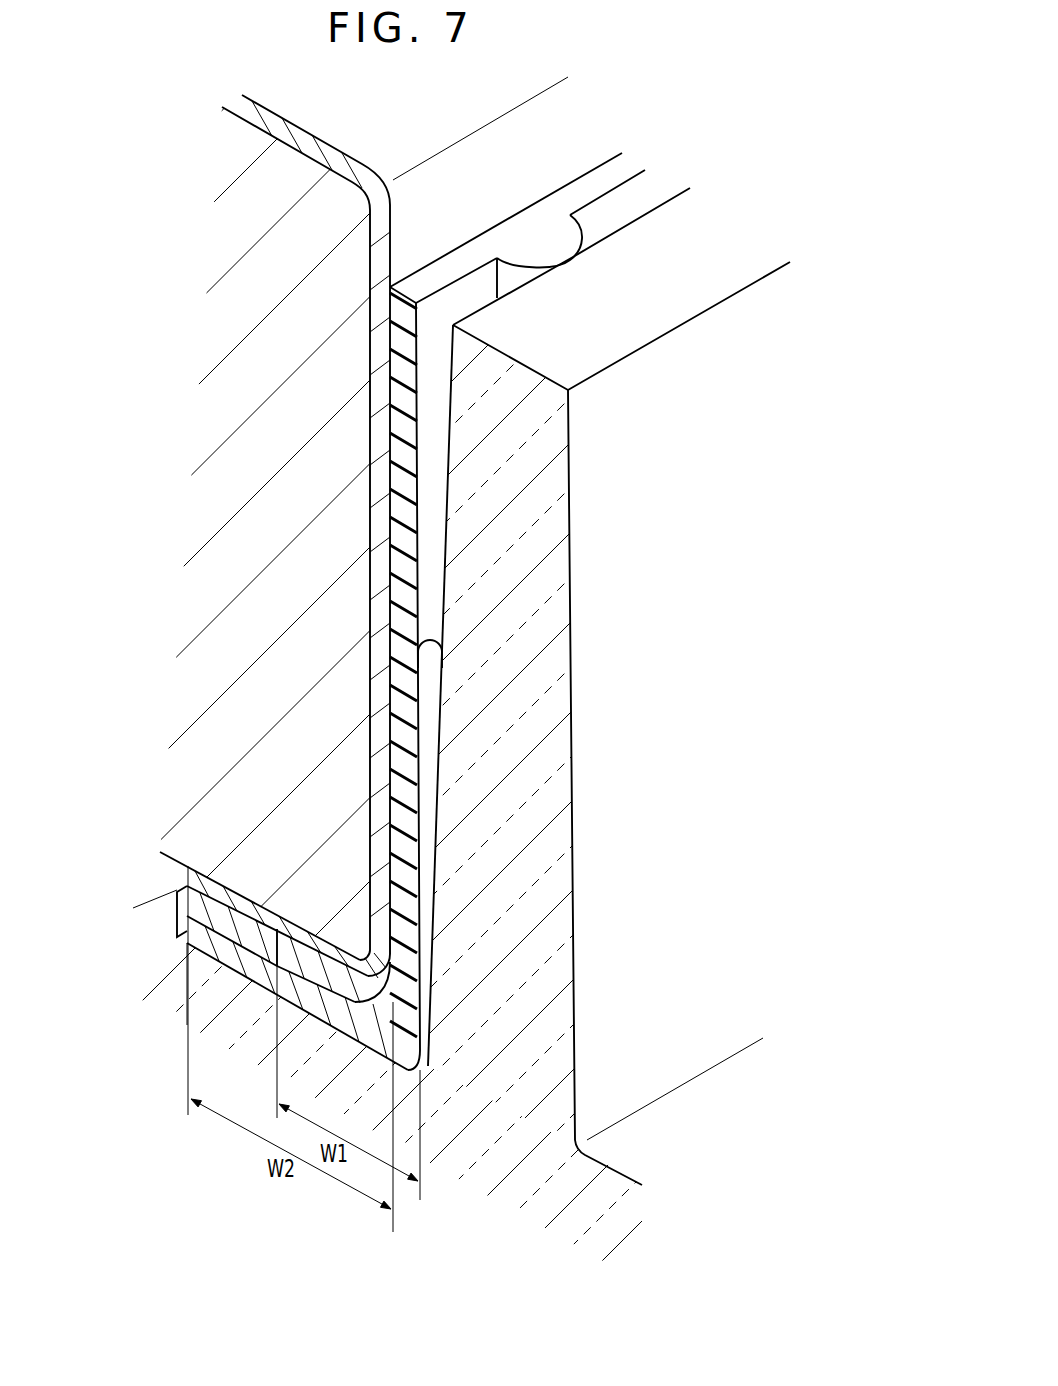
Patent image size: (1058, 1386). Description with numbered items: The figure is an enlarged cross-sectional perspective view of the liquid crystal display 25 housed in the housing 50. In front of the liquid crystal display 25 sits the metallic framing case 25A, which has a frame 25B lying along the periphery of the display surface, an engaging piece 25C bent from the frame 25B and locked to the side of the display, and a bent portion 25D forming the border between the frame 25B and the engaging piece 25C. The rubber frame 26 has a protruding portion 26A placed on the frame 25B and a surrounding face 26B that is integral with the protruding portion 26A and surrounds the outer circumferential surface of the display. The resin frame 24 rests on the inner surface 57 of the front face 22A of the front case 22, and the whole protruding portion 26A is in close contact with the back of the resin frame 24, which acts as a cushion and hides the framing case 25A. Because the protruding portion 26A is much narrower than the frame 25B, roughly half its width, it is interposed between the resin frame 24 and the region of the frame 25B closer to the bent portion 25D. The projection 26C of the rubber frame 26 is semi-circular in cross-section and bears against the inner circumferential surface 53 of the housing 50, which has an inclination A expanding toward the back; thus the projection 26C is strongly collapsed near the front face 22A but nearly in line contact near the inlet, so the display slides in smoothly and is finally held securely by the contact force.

The liquid crystal display 25 is at (364, 510).
The framing case 25A is at (387, 930).
The frame 25B is at (260, 905).
The engaging piece 25C is at (382, 837).
The bent portion 25D is at (362, 957).
The rubber frame 26 is at (416, 611).
The protruding portion 26A is at (305, 975).
The surrounding face 26B is at (415, 362).
The projection 26C is at (512, 270).
The housing 50 is at (470, 759).
The inner circumferential surface 53 is at (440, 373).
The front case 22 is at (431, 914).
The front face 22A is at (258, 1057).
The resin frame 24 is at (190, 930).
The inner surface 57 is at (150, 906).
The inclination A is at (432, 640).